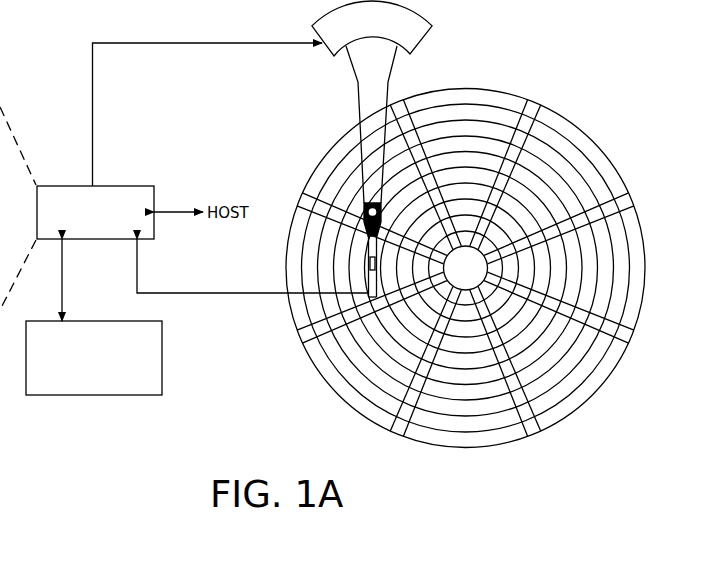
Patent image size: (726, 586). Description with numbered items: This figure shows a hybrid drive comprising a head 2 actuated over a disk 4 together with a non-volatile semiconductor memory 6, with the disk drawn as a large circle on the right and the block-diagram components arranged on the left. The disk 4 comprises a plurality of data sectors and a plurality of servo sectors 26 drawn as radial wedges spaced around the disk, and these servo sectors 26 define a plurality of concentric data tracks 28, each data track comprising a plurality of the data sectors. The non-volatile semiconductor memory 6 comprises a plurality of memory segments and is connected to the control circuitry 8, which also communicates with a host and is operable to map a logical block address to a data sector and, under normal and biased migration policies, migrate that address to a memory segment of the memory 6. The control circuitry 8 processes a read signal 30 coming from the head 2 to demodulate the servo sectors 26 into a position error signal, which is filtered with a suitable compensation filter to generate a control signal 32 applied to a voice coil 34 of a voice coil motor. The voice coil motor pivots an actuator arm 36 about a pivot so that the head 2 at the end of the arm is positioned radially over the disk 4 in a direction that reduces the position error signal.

The head 2 is at (367, 267).
The disk 4 is at (587, 131).
The non-volatile semiconductor memory 6 is at (162, 357).
The control circuitry 8 is at (125, 186).
The servo sectors 26 is at (533, 107).
The data tracks 28 is at (466, 112).
The read signal 30 is at (200, 293).
The control signal 32 is at (92, 101).
The voice coil 34 is at (328, 53).
The actuator arm 36 is at (357, 113).